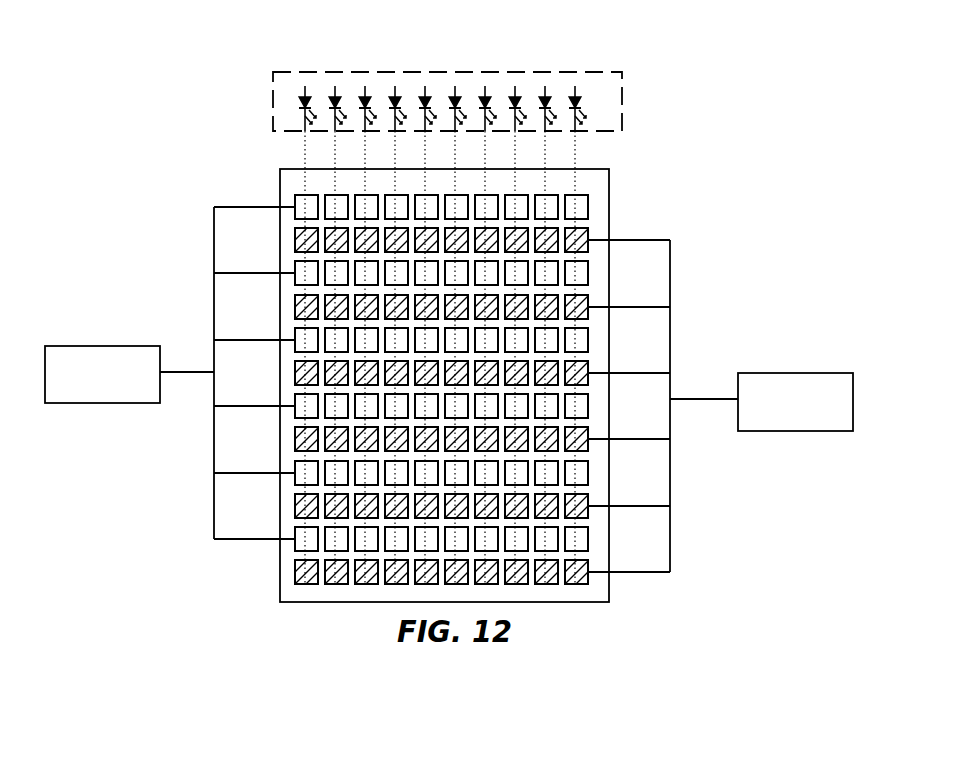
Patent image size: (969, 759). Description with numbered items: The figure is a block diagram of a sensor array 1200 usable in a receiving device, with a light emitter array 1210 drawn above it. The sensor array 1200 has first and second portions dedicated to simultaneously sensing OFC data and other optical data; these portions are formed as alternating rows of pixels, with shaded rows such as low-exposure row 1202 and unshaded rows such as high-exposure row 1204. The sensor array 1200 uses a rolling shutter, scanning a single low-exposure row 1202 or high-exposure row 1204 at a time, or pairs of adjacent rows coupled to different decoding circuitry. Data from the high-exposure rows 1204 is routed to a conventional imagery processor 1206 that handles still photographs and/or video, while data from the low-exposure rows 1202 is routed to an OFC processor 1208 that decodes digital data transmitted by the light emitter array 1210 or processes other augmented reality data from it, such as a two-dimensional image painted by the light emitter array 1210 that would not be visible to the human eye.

The sensor array 1200 is at (280, 188).
The low-exposure row 1202 is at (269, 558).
The high-exposure row 1204 is at (618, 185).
The imagery processor 1206 is at (77, 403).
The OFC processor 1208 is at (787, 431).
The light emitter array 1210 is at (575, 72).